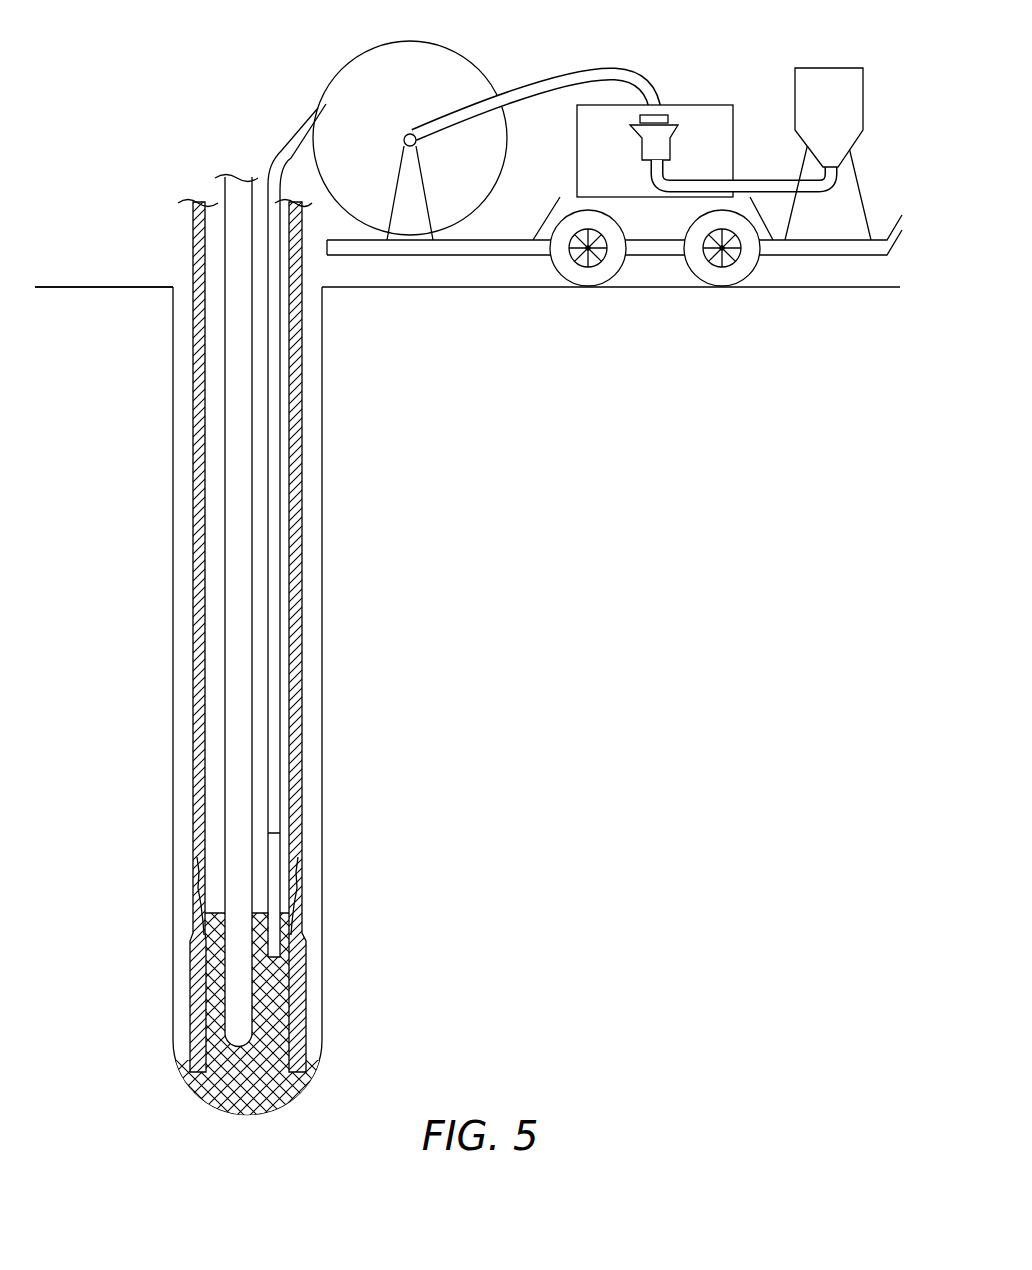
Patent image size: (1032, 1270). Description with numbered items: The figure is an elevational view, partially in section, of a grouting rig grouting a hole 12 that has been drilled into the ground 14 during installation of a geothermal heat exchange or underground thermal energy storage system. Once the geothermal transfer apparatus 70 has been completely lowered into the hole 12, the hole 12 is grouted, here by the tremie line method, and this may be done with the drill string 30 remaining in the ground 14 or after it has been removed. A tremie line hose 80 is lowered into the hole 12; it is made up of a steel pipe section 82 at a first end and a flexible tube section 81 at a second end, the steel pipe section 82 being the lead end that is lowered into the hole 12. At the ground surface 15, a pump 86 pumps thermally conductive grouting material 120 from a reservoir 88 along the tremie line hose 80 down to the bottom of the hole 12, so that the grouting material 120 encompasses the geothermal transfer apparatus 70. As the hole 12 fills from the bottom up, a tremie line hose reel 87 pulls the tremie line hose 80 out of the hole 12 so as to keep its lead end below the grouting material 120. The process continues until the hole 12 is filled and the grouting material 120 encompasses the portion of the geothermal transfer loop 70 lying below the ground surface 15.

The hole 12 is at (323, 648).
The ground 14 is at (95, 338).
The ground surface 15 is at (127, 287).
The drill string 30 is at (303, 785).
The geothermal transfer apparatus 70 is at (223, 242).
The tremie line hose 80 is at (268, 163).
The flexible tube section 81 is at (275, 555).
The steel pipe section 82 is at (278, 877).
The pump 86 is at (674, 126).
The tremie line hose reel 87 is at (403, 78).
The reservoir 88 is at (826, 90).
The grouting material 120 is at (300, 1022).